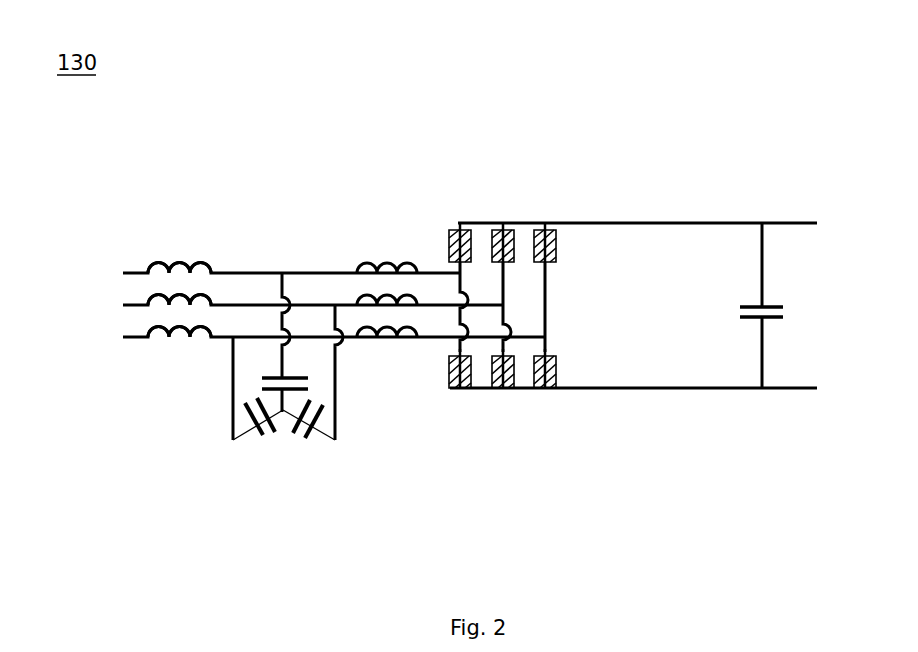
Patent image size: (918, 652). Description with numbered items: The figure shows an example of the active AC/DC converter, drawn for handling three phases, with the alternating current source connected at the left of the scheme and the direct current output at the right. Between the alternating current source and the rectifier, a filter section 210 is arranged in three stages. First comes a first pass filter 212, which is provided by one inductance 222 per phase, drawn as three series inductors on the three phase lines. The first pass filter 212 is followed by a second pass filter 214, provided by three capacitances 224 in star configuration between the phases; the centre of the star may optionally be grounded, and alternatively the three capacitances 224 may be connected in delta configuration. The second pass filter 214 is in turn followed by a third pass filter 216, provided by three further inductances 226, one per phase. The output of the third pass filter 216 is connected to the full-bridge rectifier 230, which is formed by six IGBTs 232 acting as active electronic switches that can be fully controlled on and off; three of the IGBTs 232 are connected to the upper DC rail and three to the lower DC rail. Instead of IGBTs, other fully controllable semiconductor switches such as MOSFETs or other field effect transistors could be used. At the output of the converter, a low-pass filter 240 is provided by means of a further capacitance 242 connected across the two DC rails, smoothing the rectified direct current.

The filter circuit 210 is at (231, 190).
The first pass filter 212 is at (161, 238).
The second pass filter 214 is at (271, 360).
The third pass filter 216 is at (390, 256).
The inductance 222 is at (155, 270).
The capacitances 224 is at (270, 395).
The further inductances 226 is at (365, 270).
The full-bridge rectifier 230 is at (553, 193).
The IGBTs 232 is at (546, 223).
The low-pass filter 240 is at (736, 193).
The further capacitance 242 is at (752, 305).